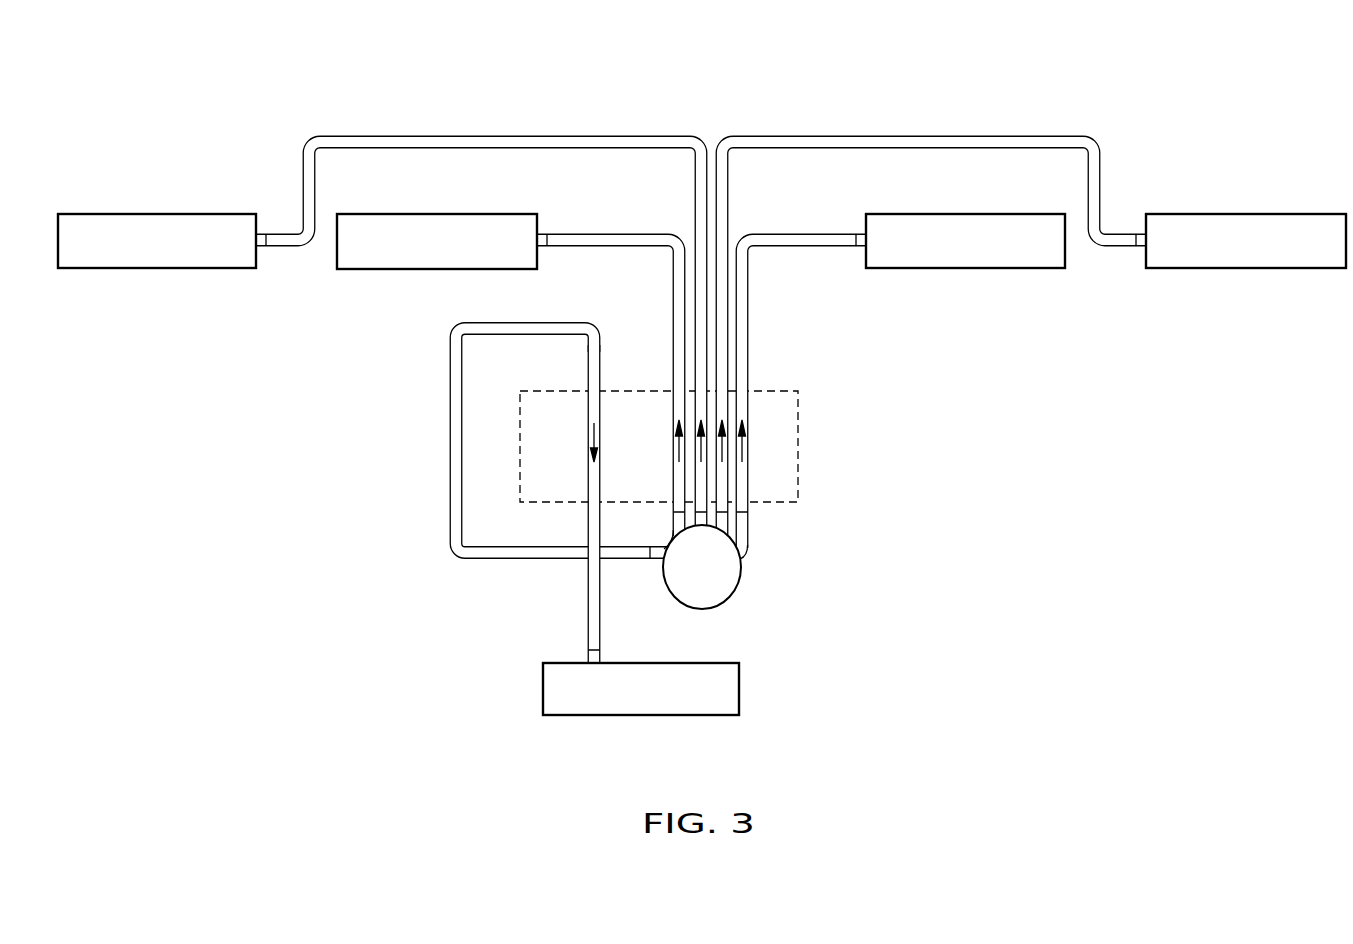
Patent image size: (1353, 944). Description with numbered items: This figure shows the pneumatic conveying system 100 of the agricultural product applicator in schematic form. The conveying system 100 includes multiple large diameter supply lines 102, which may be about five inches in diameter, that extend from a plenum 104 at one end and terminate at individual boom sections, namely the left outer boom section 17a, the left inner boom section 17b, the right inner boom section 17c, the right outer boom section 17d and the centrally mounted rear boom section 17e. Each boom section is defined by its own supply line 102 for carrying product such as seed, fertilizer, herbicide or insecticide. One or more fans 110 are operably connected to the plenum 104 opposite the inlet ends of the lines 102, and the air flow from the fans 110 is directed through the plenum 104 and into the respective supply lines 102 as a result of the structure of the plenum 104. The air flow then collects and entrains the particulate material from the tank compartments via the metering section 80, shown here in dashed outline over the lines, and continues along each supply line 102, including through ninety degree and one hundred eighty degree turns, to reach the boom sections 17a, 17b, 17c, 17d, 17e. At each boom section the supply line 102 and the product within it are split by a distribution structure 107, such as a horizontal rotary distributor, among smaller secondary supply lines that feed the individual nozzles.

The conveying system 100 is at (243, 103).
The supply line 102 is at (505, 138).
The plenum 104 is at (663, 550).
The distribution structure 107 is at (267, 240).
The fan 110 is at (730, 595).
The metering section 80 is at (798, 445).
The left outer boom section 17a is at (182, 223).
The left inner boom section 17b is at (463, 225).
The right inner boom section 17c is at (928, 227).
The right outer boom section 17d is at (1217, 223).
The rear boom section 17e is at (665, 700).